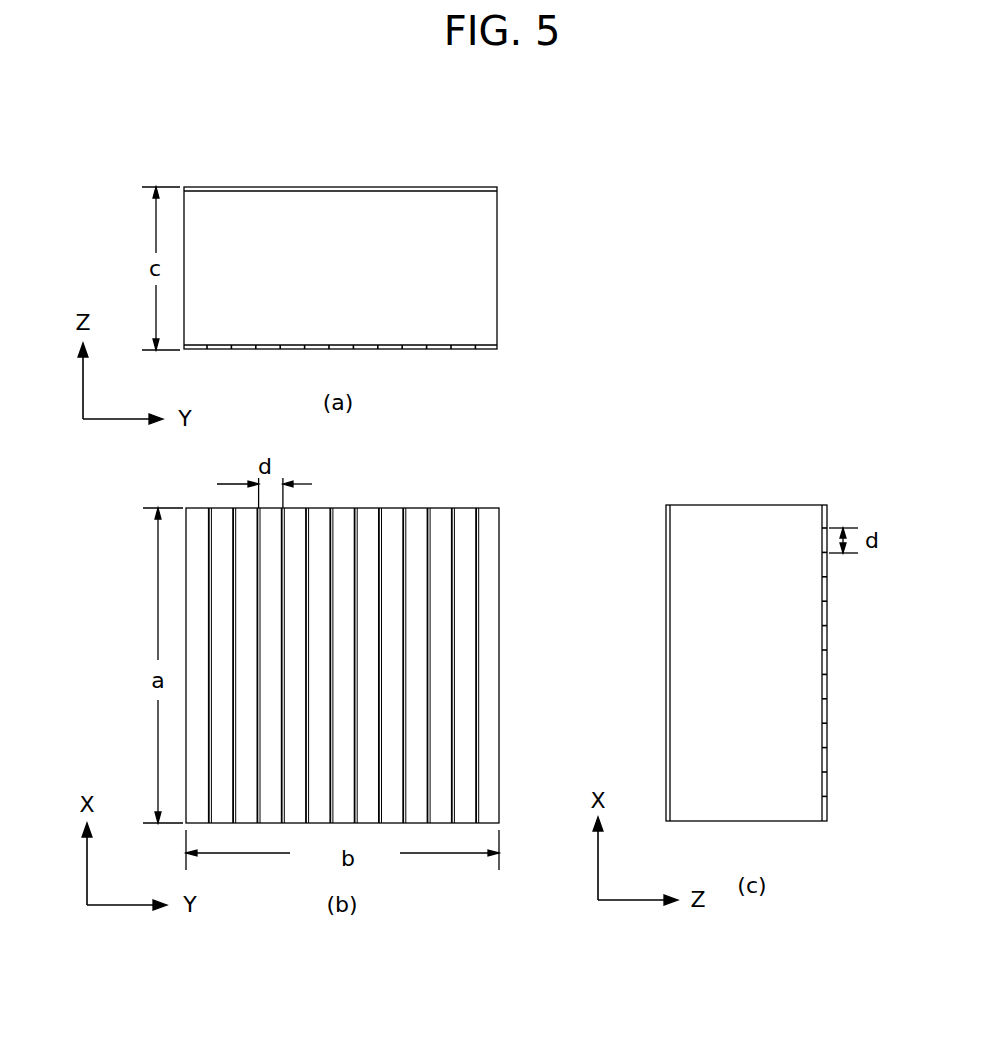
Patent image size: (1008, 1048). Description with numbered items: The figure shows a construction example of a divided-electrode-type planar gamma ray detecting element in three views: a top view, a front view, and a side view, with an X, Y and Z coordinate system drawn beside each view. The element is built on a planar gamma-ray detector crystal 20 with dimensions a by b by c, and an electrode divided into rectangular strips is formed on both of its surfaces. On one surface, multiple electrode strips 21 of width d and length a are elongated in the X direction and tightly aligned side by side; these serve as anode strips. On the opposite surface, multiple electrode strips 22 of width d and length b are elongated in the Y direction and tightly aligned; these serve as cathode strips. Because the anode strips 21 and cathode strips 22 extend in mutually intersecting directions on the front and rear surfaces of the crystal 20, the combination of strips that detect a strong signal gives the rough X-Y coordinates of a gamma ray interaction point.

The planar gamma-ray detector crystal 20 is at (485, 228).
The electrode strips (anode strips) 21 is at (438, 350).
The electrode strips (cathode strips) 22 is at (377, 187).